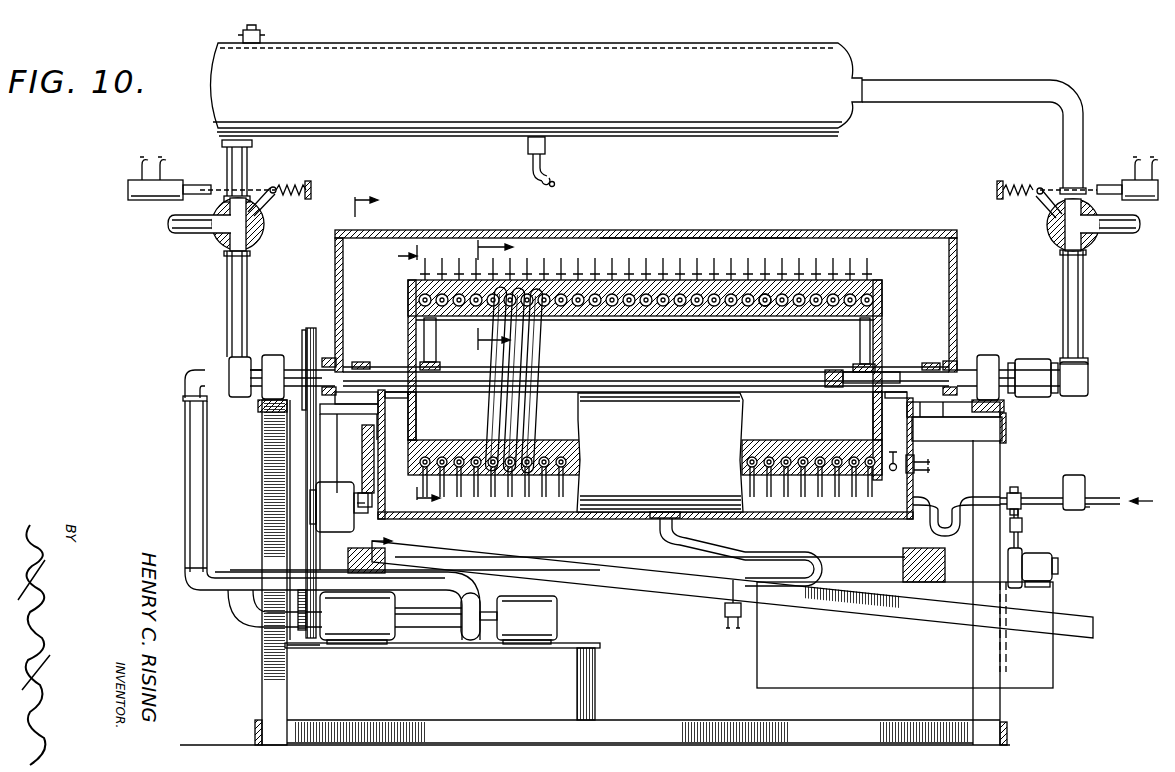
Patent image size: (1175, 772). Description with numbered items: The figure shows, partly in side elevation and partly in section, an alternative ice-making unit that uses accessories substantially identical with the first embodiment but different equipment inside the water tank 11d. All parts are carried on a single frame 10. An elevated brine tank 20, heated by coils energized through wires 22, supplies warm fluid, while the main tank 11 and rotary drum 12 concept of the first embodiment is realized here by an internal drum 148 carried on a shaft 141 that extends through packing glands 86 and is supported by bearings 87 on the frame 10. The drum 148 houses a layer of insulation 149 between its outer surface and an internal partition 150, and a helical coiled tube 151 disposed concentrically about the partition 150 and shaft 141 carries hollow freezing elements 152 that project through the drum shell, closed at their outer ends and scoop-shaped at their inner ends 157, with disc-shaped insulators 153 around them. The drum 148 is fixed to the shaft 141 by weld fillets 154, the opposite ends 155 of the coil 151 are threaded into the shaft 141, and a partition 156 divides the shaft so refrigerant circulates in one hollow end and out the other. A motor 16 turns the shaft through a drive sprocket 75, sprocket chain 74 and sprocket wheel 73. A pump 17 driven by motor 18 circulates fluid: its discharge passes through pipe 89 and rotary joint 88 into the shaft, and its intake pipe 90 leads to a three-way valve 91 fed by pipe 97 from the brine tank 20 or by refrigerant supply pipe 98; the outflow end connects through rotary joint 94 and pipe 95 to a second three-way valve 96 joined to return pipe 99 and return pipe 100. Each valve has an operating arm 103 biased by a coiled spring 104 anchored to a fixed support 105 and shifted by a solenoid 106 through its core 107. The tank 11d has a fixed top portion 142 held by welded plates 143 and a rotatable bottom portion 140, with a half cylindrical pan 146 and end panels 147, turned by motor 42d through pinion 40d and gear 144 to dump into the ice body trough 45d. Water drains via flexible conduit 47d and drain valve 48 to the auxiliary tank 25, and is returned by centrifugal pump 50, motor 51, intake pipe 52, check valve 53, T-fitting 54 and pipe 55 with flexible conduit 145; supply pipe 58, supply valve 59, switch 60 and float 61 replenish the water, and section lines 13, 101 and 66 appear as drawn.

The frame 10 is at (262, 693).
The tank 11 is at (406, 374).
The water tank 11d is at (793, 232).
The cylindrical drum 12 is at (476, 297).
The section line 13 is at (385, 373).
The motor 16 is at (380, 617).
The pump 17 is at (470, 633).
The motor 18 is at (530, 623).
The brine tank 20 is at (537, 80).
The wires 22 is at (553, 178).
The auxiliary tank 25 is at (905, 635).
The pinion 40d is at (414, 526).
The motor 42d is at (336, 515).
The ice body trough 45d is at (660, 573).
The flexible conduit 47d is at (723, 543).
The drain valve 48 is at (726, 614).
The centrifugal pump 50 is at (1020, 546).
The motor 51 is at (1054, 556).
The intake pipe 52 is at (1003, 650).
The check valve 53 is at (1024, 525).
The T-fitting 54 is at (1014, 494).
The pipe 55 is at (991, 503).
The water supply pipe 58 is at (1105, 499).
The supply valve 59 is at (1080, 508).
The switch 60 is at (918, 461).
The float 61 is at (894, 463).
The filter 66 is at (1073, 480).
The sprocket wheel 73 is at (310, 327).
The sprocket chain 74 is at (305, 468).
The drive sprocket 75 is at (296, 648).
The packing glands 86 is at (328, 357).
The bearings 87 is at (268, 356).
The rotary joint 88 is at (236, 363).
The pipe 89 is at (186, 446).
The pipe 90 is at (240, 612).
The 3-way valve 91 is at (214, 254).
The rotary joint 94 is at (1029, 360).
The pipe 95 is at (1084, 334).
The 3-way valve 96 is at (1048, 237).
The pipe 97 is at (248, 163).
The refrigerant supply pipe 98 is at (176, 235).
The return pipe 99 is at (1084, 107).
The return pipe 100 is at (1128, 237).
The plunger rod 101 is at (198, 183).
The operating arm 103 is at (268, 199).
The coiled spring 104 is at (292, 186).
The fixed support 105 is at (312, 188).
The solenoid 106 is at (128, 198).
The core 107 is at (1108, 184).
The bottom portion 140 is at (607, 433).
The shaft 141 is at (746, 372).
The top portion 142 is at (698, 229).
The welded plates 143 is at (357, 410).
The gear 144 is at (362, 469).
The flexible conduit 145 is at (936, 503).
The half cylindrical pan 146 is at (361, 362).
The end panel 147 is at (381, 408).
The drum 148 is at (410, 316).
The layer of insulation 149 is at (716, 320).
The internal partition 150 is at (655, 322).
The coiled tube 151 is at (532, 356).
The freezing elements 152 is at (870, 262).
The disc-shaped insulators 153 is at (645, 260).
The weld fillets 154 is at (414, 392).
The ends of coil 155 is at (435, 355).
The partition 156 is at (828, 386).
The inner ends 157 is at (766, 306).